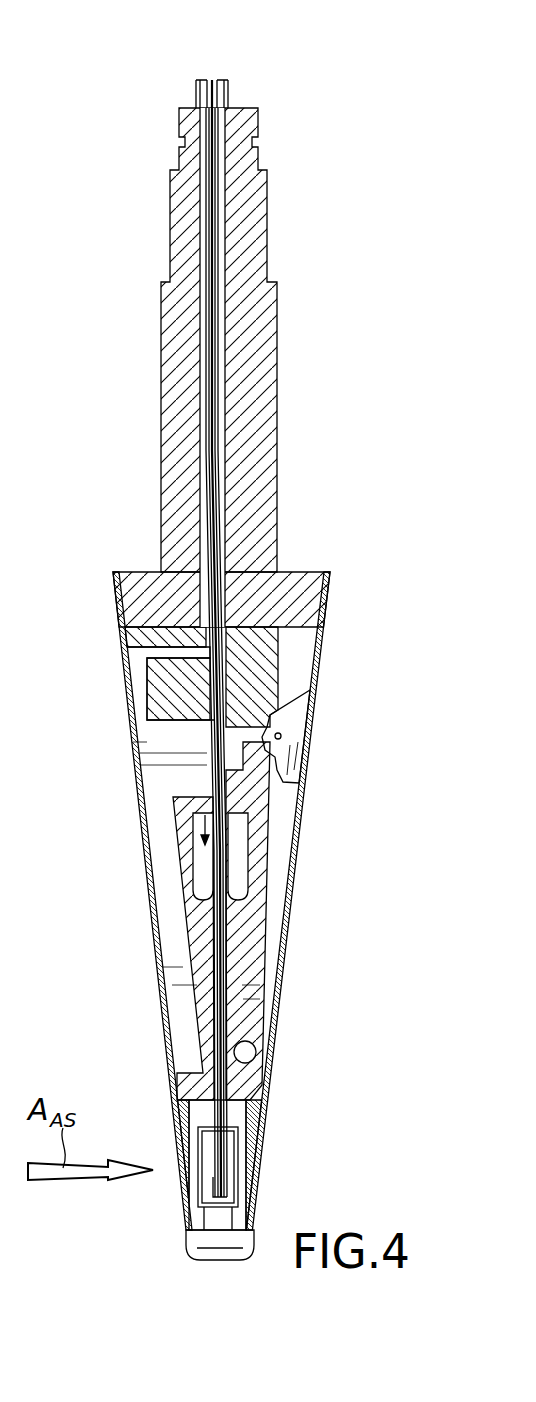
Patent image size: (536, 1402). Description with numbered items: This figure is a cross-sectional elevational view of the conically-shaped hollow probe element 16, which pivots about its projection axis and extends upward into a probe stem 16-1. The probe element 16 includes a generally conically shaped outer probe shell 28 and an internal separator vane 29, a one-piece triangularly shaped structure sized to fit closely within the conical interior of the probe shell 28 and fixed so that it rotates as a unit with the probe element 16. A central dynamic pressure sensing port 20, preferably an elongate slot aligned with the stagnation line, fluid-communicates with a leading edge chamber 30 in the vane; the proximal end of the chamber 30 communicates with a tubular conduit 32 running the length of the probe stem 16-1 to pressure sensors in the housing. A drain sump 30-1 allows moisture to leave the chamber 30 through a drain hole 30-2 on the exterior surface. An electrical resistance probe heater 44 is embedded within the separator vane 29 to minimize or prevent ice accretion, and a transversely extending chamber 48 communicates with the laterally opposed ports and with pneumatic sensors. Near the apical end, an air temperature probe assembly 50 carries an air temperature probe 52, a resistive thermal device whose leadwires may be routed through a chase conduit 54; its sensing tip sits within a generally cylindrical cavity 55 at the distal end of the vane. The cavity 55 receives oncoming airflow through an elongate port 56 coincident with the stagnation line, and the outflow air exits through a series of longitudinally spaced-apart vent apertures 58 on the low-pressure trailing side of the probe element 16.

The probe element 16 is at (112, 903).
The probe stem 16-1 is at (177, 208).
The dynamic pressure sensing port 20 is at (160, 993).
The outer probe shell 28 is at (119, 647).
The separator vane 29 is at (270, 660).
The leading edge chamber 30 is at (165, 881).
The drain sump 30-1 is at (197, 733).
The drain hole 30-2 is at (282, 737).
The tubular conduit 32 is at (197, 295).
The electrical resistance probe heater 44 is at (258, 935).
The transversely extending chamber 48 is at (193, 800).
The air temperature probe assembly 50 is at (195, 1223).
The air temperature probe 52 is at (225, 1157).
The chase conduit 54 is at (220, 1017).
The cylindrical cavity 55 is at (237, 1113).
The port 56 is at (183, 1183).
The vent apertures 58 is at (263, 1205).